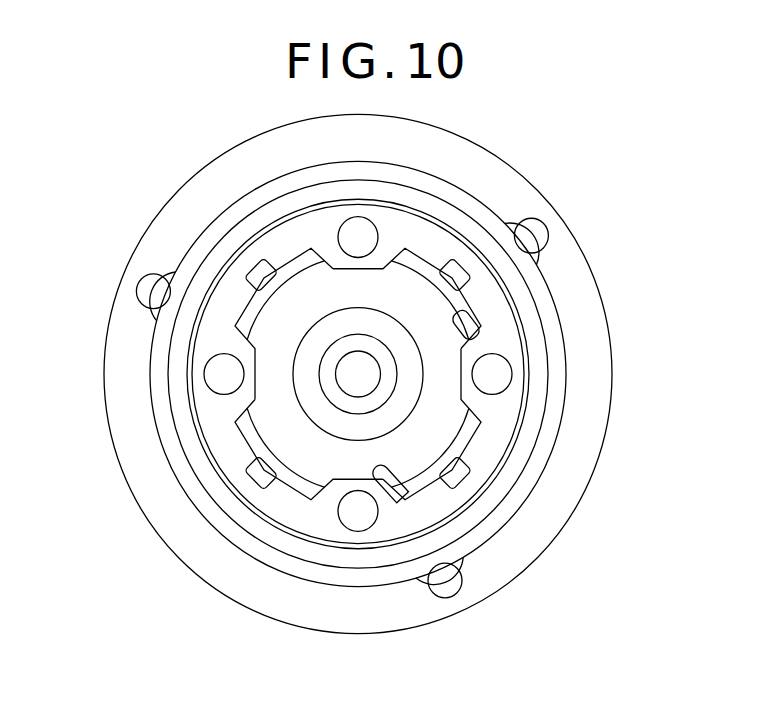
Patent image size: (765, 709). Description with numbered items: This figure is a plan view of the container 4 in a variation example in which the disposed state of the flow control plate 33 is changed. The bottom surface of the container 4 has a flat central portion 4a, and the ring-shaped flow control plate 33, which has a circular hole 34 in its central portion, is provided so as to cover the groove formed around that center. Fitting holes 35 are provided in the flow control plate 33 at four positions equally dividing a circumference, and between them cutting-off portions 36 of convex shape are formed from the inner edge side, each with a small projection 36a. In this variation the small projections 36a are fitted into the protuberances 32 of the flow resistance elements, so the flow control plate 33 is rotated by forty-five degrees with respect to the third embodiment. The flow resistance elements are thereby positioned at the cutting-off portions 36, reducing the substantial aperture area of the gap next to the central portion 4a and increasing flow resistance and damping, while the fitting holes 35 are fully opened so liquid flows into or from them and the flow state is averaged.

The container 4 is at (548, 352).
The central portion 4a is at (343, 428).
The protuberance 32 is at (458, 267).
The flow control plate 33 is at (498, 423).
The circular hole 34 is at (411, 496).
The fitting hole 35 is at (511, 374).
The cutting-off portion 36 is at (521, 332).
The small projection 36a is at (262, 261).